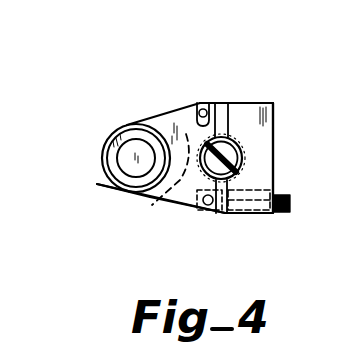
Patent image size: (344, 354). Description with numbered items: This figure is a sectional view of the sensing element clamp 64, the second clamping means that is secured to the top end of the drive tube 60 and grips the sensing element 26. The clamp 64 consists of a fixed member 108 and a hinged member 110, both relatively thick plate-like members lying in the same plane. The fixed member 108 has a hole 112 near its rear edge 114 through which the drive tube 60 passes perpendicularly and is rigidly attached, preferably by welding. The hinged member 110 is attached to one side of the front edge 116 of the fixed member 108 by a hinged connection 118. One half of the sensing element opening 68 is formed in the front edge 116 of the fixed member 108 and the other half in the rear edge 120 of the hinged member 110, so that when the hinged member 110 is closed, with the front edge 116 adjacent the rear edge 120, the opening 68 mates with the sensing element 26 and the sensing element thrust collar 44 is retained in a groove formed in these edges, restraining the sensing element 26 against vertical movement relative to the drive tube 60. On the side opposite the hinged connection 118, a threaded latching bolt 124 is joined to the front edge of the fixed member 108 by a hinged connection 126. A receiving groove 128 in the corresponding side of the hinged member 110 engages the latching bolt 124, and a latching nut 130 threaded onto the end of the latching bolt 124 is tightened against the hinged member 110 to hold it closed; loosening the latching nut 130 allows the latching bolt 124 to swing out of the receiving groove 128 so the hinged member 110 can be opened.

The sensing element 26 is at (239, 168).
The sensing element thrust collar 44 is at (150, 203).
The drive tube 60 is at (128, 128).
The sensing element clamp 64 is at (153, 88).
The sensing element opening 68 is at (225, 136).
The fixed member 108 is at (130, 197).
The hinged member 110 is at (262, 103).
The hole 112 is at (104, 178).
The rear edge 114 is at (100, 153).
The front edge 116 is at (244, 213).
The hinged connection 118 is at (203, 108).
The rear edge 120 is at (272, 152).
The latching bolt 124 is at (232, 214).
The hinged connection 126 is at (212, 217).
The receiving groove 128 is at (258, 189).
The latching nut 130 is at (283, 212).